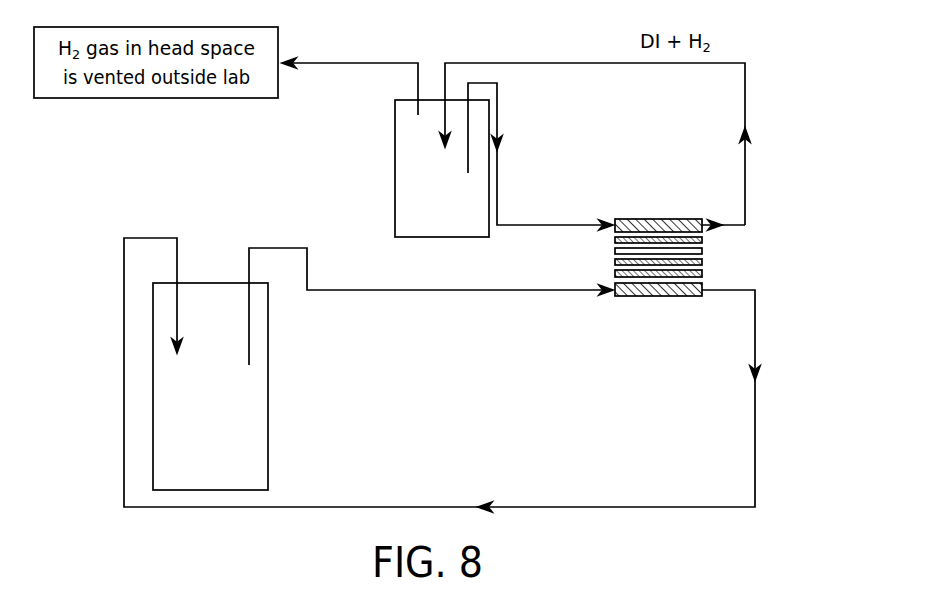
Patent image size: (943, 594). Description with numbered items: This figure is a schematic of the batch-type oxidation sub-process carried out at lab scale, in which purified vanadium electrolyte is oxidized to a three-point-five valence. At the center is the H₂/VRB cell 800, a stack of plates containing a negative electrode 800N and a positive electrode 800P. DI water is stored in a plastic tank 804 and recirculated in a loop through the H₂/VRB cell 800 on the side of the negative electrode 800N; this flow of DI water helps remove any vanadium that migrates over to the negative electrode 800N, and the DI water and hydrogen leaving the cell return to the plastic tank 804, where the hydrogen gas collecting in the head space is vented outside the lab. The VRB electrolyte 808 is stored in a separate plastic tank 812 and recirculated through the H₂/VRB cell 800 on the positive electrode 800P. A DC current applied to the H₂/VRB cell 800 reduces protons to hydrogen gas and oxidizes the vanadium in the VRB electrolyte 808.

The H₂/VRB cell 800 is at (727, 207).
The negative electrode 800N is at (710, 244).
The positive electrode 800P is at (710, 263).
The plastic tank 804 is at (395, 172).
The VRB electrolyte 808 is at (232, 397).
The plastic tank 812 is at (268, 400).